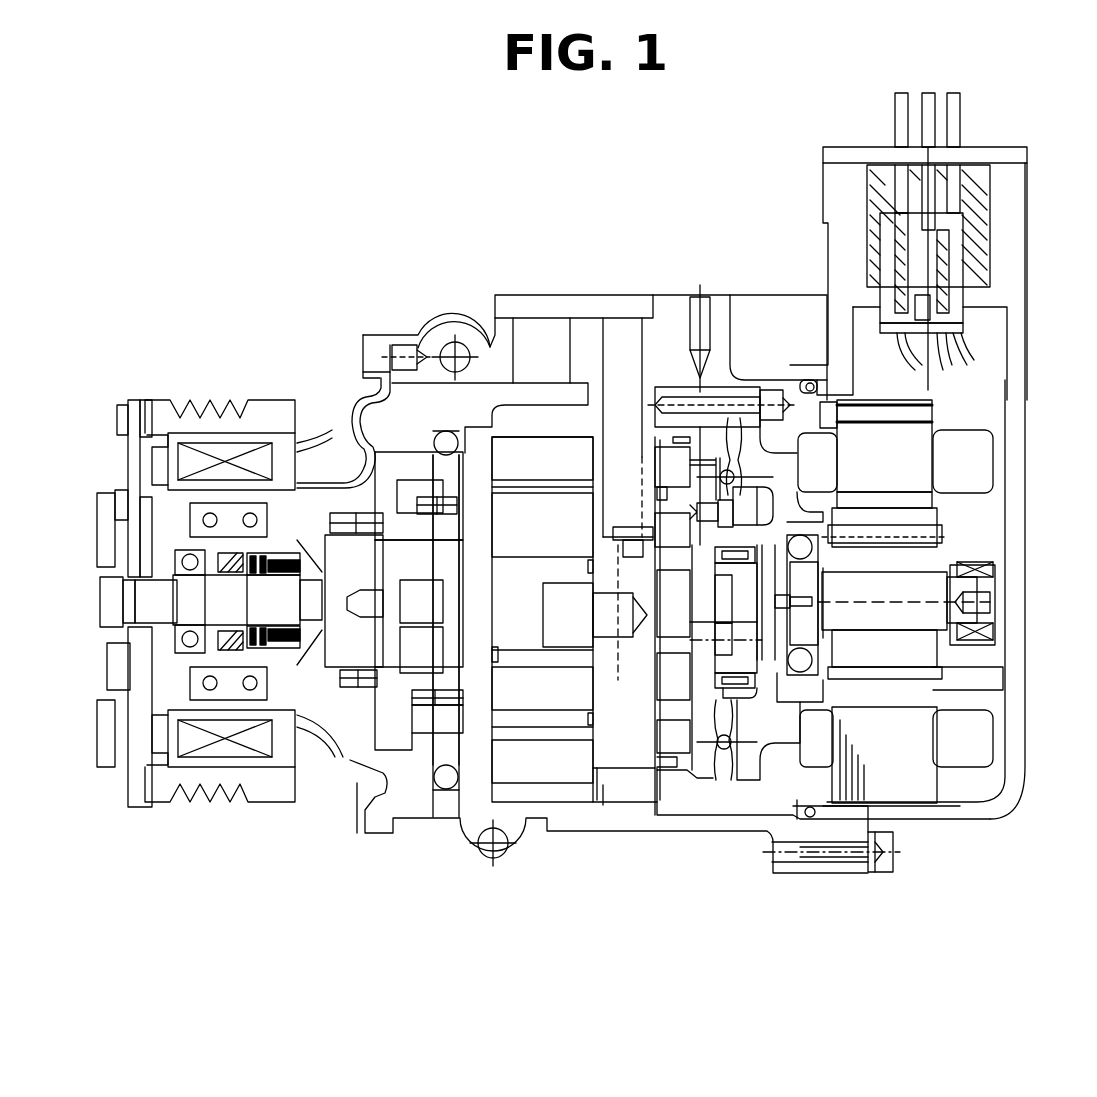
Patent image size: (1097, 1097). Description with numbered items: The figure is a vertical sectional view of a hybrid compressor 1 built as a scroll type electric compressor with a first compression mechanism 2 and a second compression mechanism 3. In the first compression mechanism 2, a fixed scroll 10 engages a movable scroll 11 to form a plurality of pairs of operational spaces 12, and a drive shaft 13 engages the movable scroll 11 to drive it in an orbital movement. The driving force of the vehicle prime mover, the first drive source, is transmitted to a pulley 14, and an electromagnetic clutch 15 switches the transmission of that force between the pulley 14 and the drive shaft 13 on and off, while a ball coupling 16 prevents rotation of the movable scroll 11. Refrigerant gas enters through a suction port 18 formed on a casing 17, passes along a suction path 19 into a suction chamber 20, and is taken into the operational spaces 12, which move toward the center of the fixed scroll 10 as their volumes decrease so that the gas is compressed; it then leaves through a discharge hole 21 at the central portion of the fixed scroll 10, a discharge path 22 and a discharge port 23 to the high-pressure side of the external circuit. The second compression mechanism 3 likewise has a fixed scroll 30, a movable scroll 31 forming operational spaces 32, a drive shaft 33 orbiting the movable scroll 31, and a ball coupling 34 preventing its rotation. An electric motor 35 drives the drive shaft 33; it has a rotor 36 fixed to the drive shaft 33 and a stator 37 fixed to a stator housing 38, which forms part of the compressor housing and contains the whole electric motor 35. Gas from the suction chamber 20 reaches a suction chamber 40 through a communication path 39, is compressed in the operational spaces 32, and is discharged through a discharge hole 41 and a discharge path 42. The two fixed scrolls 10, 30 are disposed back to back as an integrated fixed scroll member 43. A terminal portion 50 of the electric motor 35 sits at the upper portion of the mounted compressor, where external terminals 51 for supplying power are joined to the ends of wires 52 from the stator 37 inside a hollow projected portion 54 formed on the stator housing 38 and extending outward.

The hybrid compressor 1 is at (383, 258).
The first compression mechanism 2 is at (572, 806).
The second compression mechanism 3 is at (702, 805).
The fixed scroll 10 is at (556, 737).
The movable scroll 11 is at (522, 717).
The operational spaces 12 is at (556, 554).
The drive shaft 13 is at (233, 600).
The pulley 14 is at (165, 400).
The electromagnetic clutch 15 is at (228, 440).
The ball coupling 16 is at (440, 440).
The casing 17 is at (487, 342).
The suction port 18 is at (540, 300).
The suction path 19 is at (533, 352).
The suction chamber 20 is at (463, 397).
The discharge hole 21 is at (608, 613).
The discharge path 22 is at (620, 627).
The discharge port 23 is at (630, 375).
The fixed scroll 30 is at (680, 710).
The movable scroll 31 is at (675, 690).
The operational spaces 32 is at (677, 667).
The drive shaft 33 is at (880, 617).
The ball coupling 34 is at (718, 783).
The electric motor 35 is at (940, 458).
The rotor 36 is at (910, 653).
The stator 37 is at (850, 457).
The stator housing 38 is at (1012, 786).
The communication path 39 is at (623, 790).
The suction chamber 40 is at (703, 433).
The discharge hole 41 is at (628, 527).
The discharge path 42 is at (632, 382).
The integrated fixed scroll member 43 is at (603, 790).
The terminal portion 50 is at (998, 237).
The external terminals 51 is at (957, 117).
The wires 52 is at (957, 348).
The hollow projected portion 54 is at (1010, 263).